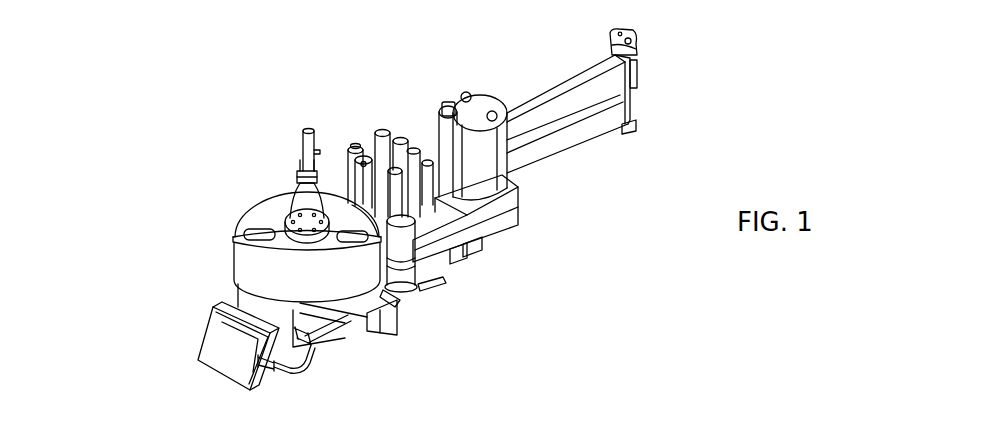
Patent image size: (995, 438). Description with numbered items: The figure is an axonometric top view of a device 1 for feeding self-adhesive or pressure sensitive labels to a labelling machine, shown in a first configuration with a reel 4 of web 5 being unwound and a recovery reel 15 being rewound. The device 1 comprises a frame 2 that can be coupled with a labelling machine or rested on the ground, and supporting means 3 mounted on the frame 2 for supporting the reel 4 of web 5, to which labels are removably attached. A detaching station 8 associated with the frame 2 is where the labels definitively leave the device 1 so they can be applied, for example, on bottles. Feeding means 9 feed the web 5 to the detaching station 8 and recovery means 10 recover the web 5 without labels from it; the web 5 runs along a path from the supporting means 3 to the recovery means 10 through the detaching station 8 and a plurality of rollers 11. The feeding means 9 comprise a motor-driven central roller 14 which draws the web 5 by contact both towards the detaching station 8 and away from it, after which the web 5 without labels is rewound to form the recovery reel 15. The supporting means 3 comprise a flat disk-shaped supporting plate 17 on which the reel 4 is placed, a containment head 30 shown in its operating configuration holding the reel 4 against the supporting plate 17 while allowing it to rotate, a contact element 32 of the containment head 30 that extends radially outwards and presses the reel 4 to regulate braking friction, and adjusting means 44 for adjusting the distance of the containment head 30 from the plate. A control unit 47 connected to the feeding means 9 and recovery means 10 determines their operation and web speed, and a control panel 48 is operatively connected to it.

The device for feeding self-adhesive labels 1 is at (126, 141).
The frame 2 is at (505, 211).
The supporting means 3 is at (257, 157).
The reel 4 is at (307, 293).
The web 5 is at (613, 93).
The detaching station 8 is at (592, 55).
The feeding means 9 is at (392, 112).
The recovery means 10 is at (460, 300).
The rollers 11 is at (383, 188).
The motor-driven central roller 14 is at (458, 103).
The recovery reel 15 is at (400, 280).
The supporting plate 17 is at (237, 272).
The containment head 30 is at (272, 210).
The contact element 32 is at (237, 234).
The adjusting means 44 is at (291, 155).
The control unit 47 is at (213, 342).
The control panel 48 is at (232, 364).